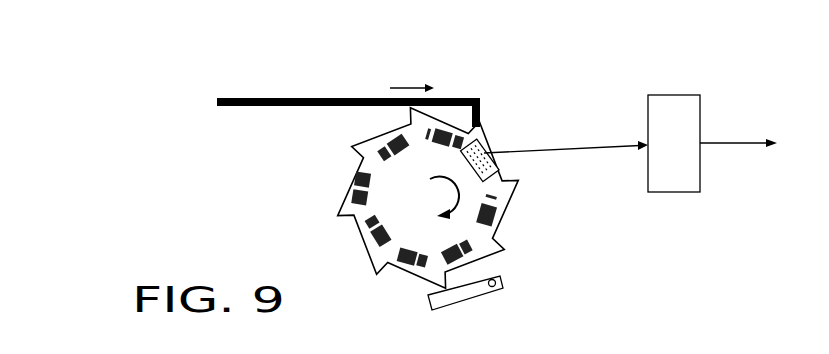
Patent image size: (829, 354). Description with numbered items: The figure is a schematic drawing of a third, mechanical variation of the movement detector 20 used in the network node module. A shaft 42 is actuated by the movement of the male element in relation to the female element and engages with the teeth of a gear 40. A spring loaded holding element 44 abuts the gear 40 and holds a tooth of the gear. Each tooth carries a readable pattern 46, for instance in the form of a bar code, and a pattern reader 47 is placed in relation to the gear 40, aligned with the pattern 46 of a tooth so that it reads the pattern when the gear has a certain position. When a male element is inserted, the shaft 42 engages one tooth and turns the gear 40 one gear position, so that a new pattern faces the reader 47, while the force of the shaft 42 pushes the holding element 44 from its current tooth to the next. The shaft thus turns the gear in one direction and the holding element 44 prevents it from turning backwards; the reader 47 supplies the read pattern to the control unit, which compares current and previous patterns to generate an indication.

The movement detector 20 is at (205, 168).
The gear 40 is at (363, 154).
The shaft 42 is at (285, 95).
The spring loaded holding element 44 is at (505, 283).
The readable pattern 46 is at (487, 150).
The pattern reader 47 is at (693, 152).